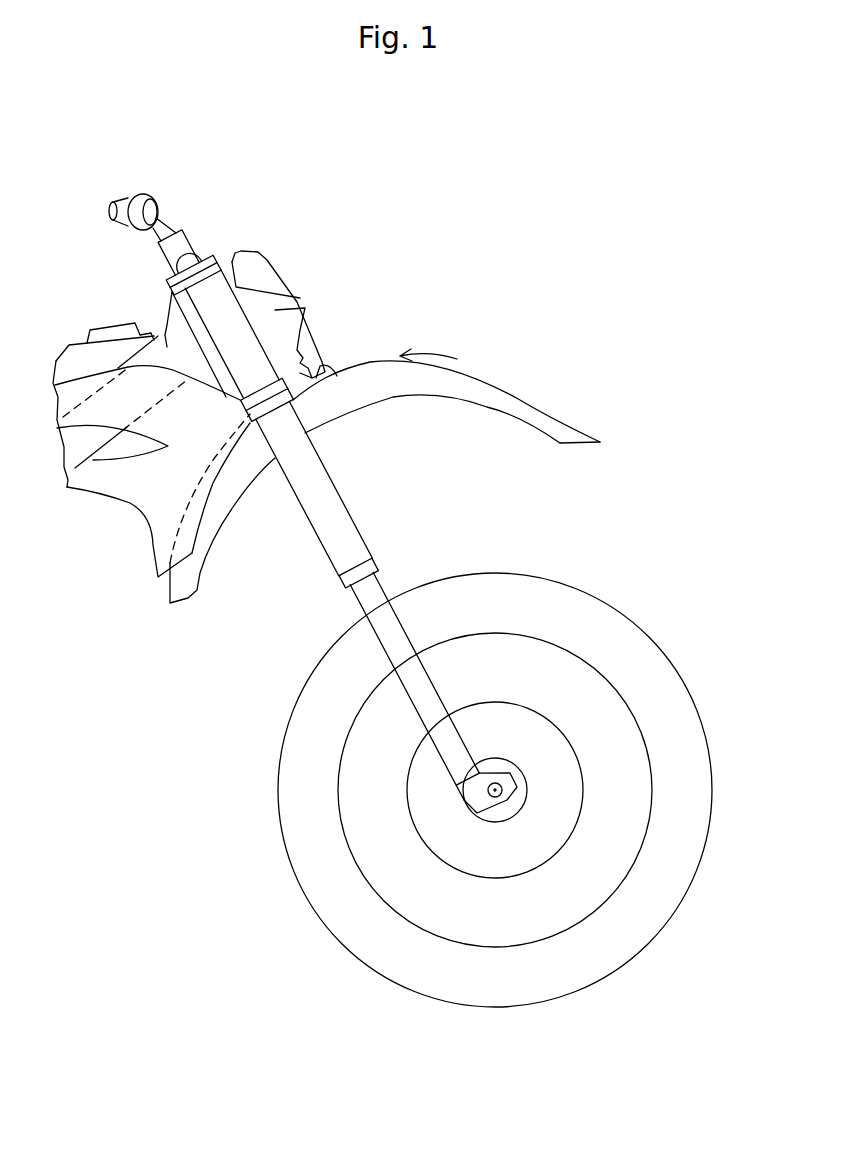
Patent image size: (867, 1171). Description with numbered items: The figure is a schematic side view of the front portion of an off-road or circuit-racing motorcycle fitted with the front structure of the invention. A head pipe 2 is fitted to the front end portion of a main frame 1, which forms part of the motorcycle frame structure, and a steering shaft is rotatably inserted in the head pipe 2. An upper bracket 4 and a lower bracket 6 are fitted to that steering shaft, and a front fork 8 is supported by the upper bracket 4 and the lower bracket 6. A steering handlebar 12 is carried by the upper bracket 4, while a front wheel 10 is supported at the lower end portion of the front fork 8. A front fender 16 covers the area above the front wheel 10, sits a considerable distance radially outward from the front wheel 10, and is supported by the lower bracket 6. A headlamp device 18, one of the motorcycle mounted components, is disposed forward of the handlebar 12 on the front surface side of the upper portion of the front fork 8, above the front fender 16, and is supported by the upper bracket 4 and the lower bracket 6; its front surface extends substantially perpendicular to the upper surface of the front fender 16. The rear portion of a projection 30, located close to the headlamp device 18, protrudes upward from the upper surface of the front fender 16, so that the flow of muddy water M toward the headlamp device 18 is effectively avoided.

The main frame 1 is at (168, 343).
The head pipe 2 is at (192, 305).
The upper bracket 4 is at (221, 268).
The lower bracket 6 is at (273, 387).
The front fork 8 is at (378, 595).
The front wheel 10 is at (656, 671).
The steering handlebar 12 is at (132, 207).
The front fender 16 is at (550, 405).
The headlamp device 18 is at (305, 302).
The projection 30 is at (333, 372).
The muddy water M is at (433, 350).